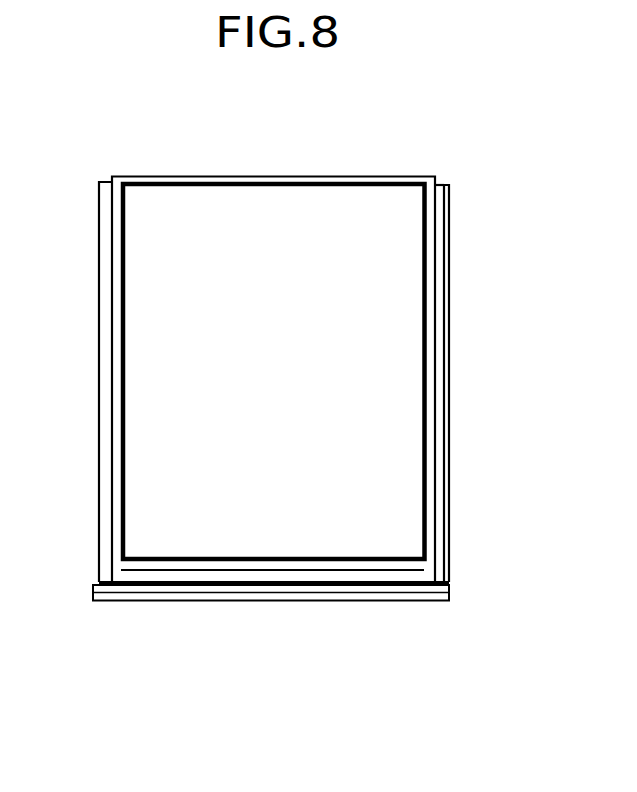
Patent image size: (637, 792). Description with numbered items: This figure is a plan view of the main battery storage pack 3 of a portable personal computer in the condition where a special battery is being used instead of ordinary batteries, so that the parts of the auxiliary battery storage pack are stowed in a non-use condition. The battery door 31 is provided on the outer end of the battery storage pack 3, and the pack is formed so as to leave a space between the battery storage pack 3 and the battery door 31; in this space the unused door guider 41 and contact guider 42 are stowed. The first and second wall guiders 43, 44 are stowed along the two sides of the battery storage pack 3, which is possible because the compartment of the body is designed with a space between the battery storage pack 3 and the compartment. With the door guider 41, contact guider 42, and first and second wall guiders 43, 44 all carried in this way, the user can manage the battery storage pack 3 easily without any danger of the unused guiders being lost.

The main battery storage pack 3 is at (261, 181).
The battery door 31 is at (255, 598).
The door guider 41 is at (157, 574).
The contact guider 42 is at (348, 565).
The first wall guider 43 is at (102, 341).
The second wall guider 44 is at (441, 378).